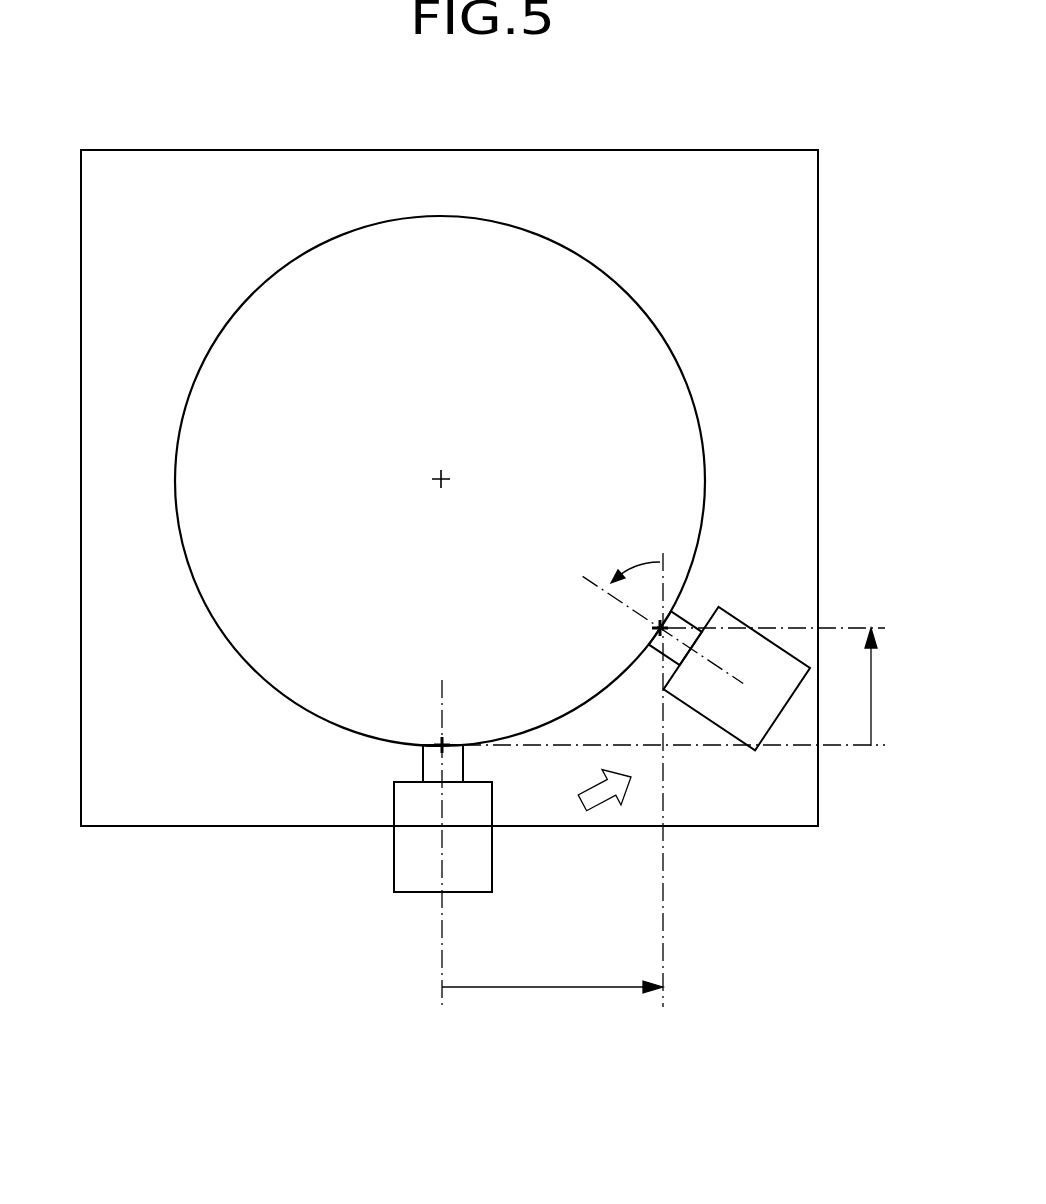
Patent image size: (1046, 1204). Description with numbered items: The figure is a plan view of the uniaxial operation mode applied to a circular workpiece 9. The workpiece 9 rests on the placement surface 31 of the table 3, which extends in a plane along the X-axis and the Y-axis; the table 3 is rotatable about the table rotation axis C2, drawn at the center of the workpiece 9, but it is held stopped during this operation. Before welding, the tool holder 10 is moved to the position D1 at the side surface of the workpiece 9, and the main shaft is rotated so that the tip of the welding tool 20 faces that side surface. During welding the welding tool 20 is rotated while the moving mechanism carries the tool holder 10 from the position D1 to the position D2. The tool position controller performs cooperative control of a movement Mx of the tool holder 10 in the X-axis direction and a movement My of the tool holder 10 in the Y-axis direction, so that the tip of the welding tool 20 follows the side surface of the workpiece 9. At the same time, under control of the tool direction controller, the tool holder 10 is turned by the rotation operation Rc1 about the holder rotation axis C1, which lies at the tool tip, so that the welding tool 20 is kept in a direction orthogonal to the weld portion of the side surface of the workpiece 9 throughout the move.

The table 3 is at (333, 170).
The placement surface 31 is at (487, 195).
The workpiece 9 is at (345, 273).
The tool holder 10 is at (413, 860).
The welding tool 20 is at (428, 762).
The holder rotation axis C1 is at (658, 630).
The table rotation axis C2 is at (447, 472).
The rotation operation Rc1 is at (630, 557).
The movement in the X-axis direction Mx is at (552, 971).
The movement in the Y-axis direction My is at (892, 687).
The position D1 is at (487, 914).
The position D2 is at (781, 782).